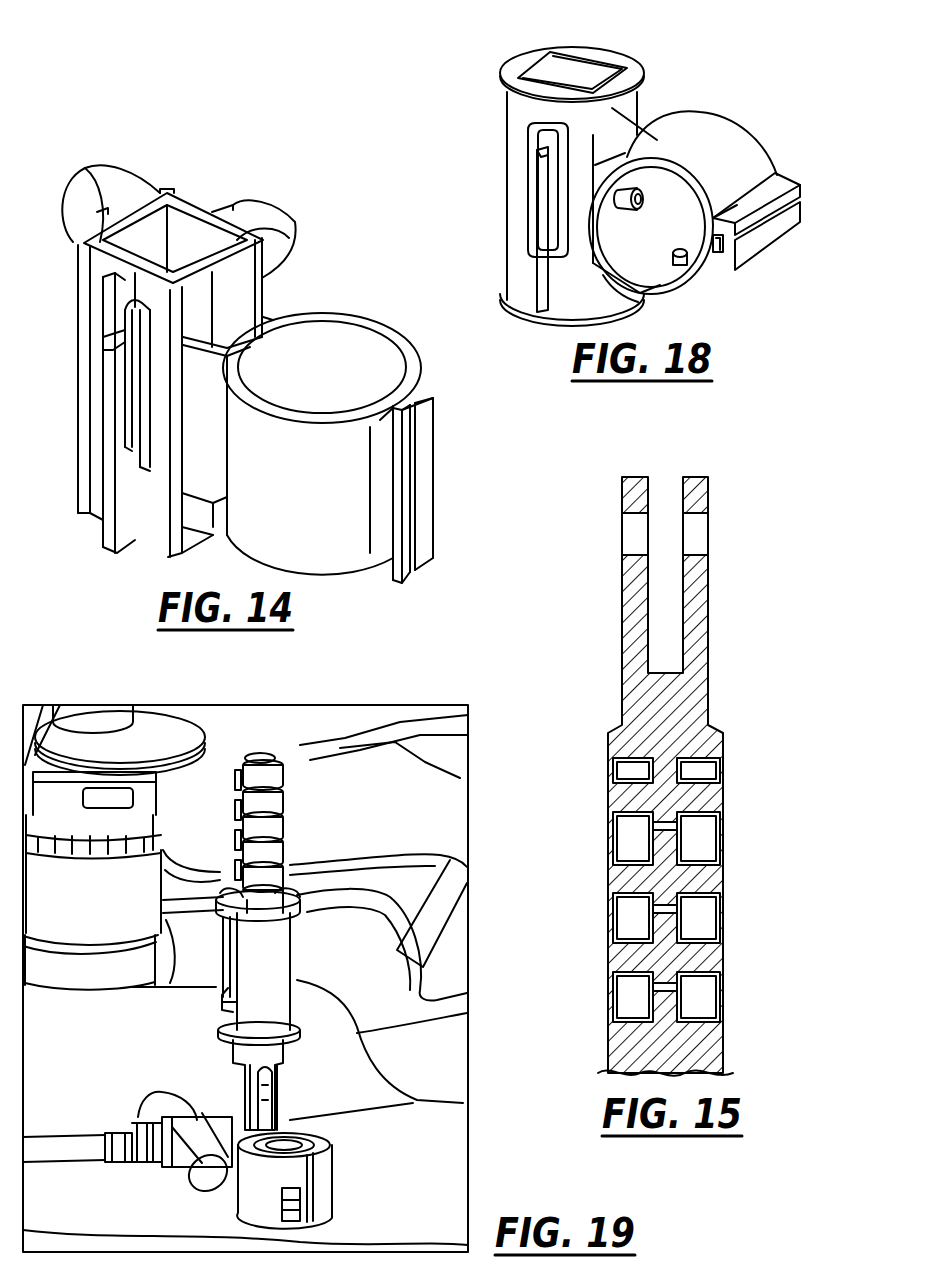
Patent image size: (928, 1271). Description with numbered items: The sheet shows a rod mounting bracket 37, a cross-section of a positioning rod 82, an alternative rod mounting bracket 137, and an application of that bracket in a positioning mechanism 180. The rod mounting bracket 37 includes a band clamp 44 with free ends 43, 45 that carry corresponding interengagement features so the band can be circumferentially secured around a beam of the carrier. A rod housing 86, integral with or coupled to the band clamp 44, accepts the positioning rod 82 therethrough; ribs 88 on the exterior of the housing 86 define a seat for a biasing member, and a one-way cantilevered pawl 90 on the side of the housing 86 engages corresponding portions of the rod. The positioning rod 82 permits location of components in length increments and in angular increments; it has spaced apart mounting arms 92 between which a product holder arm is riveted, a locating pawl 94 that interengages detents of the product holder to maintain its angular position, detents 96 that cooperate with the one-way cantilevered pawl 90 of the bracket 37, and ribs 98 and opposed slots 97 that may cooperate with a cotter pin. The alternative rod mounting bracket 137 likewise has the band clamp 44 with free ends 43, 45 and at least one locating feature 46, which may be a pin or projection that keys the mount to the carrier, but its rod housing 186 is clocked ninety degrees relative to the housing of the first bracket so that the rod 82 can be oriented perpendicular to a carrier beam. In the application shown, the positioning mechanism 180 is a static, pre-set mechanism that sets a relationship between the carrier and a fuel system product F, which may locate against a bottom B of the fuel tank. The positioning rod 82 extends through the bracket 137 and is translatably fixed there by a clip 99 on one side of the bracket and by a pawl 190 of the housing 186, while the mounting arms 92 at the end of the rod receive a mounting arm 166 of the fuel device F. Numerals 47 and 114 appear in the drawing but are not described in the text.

In FIG. 14, the rod mounting bracket 37 is at (74, 544).
In FIG. 14, the free end 43 is at (382, 430).
In FIG. 18, the free end 43 is at (768, 205).
In FIG. 14, the band clamp 44 is at (379, 316).
In FIG. 18, the band clamp 44 is at (744, 101).
In FIG. 14, the free end 45 is at (430, 393).
In FIG. 18, the free end 45 is at (767, 238).
In FIG. 18, the locating feature 46 is at (680, 266).
In FIG. 18, the boss 47 is at (630, 210).
In FIG. 15, the positioning rod 82 is at (796, 797).
In FIG. 19, the positioning rod 82 is at (265, 775).
In FIG. 14, the rod housing 86 is at (64, 288).
In FIG. 14, the ribs 88 is at (194, 211).
In FIG. 14, the one-way cantilevered pawl 90 is at (117, 362).
In FIG. 15, the mounting arms 92 is at (697, 480).
In FIG. 19, the mounting arms 92 is at (244, 1097).
In FIG. 15, the locating pawl 94 is at (658, 672).
In FIG. 15, the detents 96 is at (677, 853).
In FIG. 15, the opposed slots 97 is at (612, 770).
In FIG. 15, the ribs 98 is at (620, 802).
In FIG. 19, the clip 99 is at (226, 922).
In FIG. 19, the manifold 114 is at (440, 1063).
In FIG. 18, the rod mounting bracket 137 is at (655, 42).
In FIG. 19, the rod mounting bracket 137 is at (306, 998).
In FIG. 19, the mounting arm 166 is at (279, 1108).
In FIG. 19, the positioning mechanism 180 is at (124, 1069).
In FIG. 18, the rod housing 186 is at (502, 166).
In FIG. 19, the pawl 190 is at (218, 997).
In FIG. 19, the bottom B is at (403, 1207).
In FIG. 19, the fuel system product F is at (226, 1200).